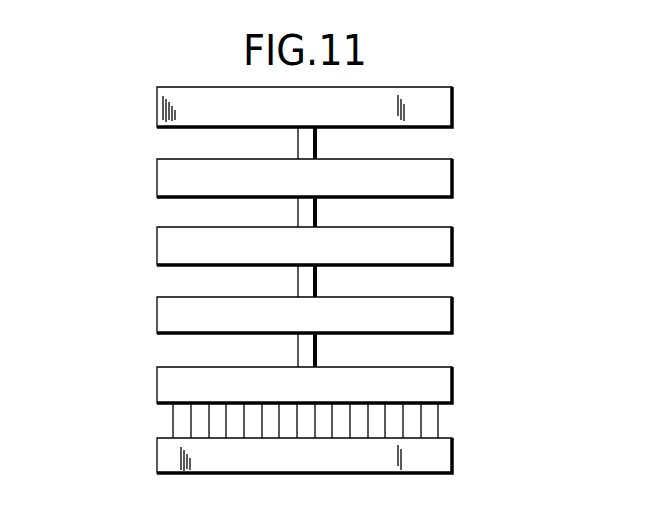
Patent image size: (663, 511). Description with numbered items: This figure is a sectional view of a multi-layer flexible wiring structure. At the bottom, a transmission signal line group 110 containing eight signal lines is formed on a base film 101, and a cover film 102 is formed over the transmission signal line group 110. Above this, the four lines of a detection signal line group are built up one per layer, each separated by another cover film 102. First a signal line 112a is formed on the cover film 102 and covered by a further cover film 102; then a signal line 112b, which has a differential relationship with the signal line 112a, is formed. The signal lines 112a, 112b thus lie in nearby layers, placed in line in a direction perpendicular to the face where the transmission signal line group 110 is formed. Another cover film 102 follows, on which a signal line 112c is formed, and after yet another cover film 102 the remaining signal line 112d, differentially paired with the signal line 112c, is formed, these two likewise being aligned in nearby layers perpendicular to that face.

The base film 101 is at (452, 453).
The cover film 102 is at (157, 101).
The transmission signal line group 110 is at (439, 417).
The signal line 112a is at (318, 352).
The signal line 112b is at (318, 279).
The signal line 112c is at (318, 211).
The signal line 112d is at (318, 142).